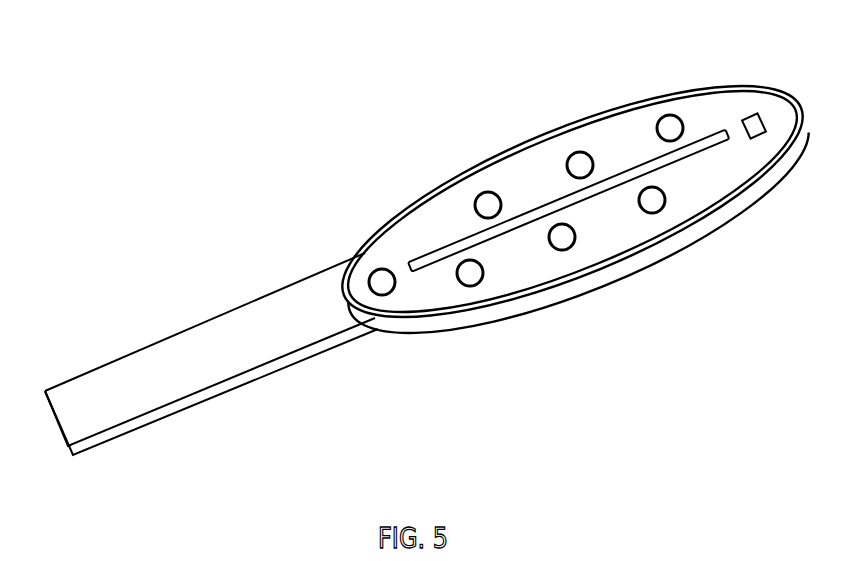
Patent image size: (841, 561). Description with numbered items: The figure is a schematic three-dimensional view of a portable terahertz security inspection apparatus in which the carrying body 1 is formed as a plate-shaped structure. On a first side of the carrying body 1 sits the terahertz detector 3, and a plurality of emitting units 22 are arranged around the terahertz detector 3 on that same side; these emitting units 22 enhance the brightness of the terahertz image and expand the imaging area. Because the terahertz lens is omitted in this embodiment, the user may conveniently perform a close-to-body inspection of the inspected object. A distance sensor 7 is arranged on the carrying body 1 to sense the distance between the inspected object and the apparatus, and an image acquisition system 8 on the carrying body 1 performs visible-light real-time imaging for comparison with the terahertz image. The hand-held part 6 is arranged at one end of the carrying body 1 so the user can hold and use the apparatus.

The carrying body 1 is at (365, 269).
The terahertz detector 3 is at (437, 272).
The hand-held part 6 is at (170, 366).
The distance sensor 7 is at (744, 108).
The image acquisition system 8 is at (382, 295).
The emitting units 22 is at (495, 286).